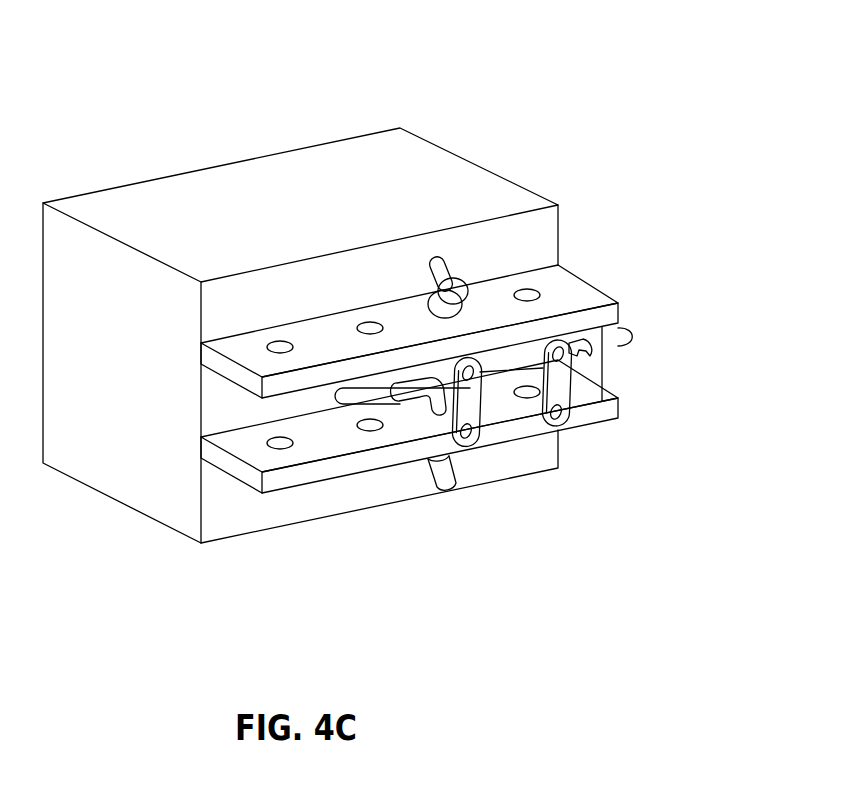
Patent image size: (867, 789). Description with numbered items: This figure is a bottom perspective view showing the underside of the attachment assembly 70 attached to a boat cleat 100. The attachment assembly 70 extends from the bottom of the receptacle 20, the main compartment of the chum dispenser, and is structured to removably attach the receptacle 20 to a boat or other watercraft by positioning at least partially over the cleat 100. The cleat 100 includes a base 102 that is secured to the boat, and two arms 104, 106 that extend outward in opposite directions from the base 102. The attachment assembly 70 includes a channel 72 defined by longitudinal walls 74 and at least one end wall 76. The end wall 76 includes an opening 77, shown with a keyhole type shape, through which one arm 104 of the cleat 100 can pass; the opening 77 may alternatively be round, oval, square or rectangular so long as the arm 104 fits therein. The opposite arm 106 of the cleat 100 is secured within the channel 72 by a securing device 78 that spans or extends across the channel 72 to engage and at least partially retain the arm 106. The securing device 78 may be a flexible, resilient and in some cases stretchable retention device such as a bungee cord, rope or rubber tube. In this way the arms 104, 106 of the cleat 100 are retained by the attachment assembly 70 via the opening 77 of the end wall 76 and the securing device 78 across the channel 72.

The receptacle 20 is at (243, 177).
The attachment assembly 70 is at (476, 329).
The channel 72 is at (225, 418).
The longitudinal walls 74 is at (499, 300).
The end wall 76 is at (613, 382).
The opening 77 is at (580, 360).
The securing device 78 is at (428, 377).
The cleat 100 is at (500, 368).
The base 102 is at (573, 403).
The arm 104 is at (637, 337).
The arm 106 is at (352, 397).